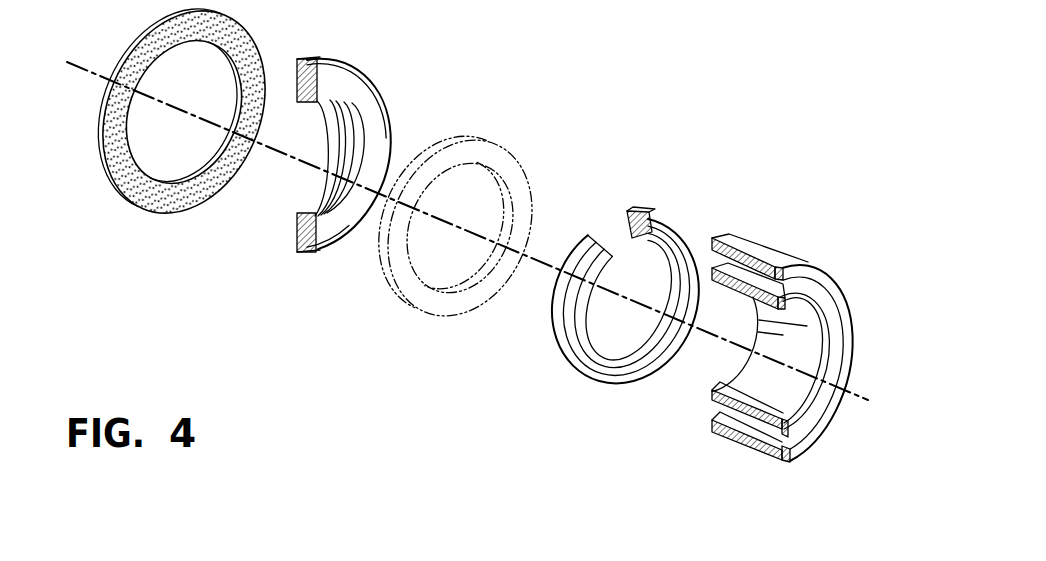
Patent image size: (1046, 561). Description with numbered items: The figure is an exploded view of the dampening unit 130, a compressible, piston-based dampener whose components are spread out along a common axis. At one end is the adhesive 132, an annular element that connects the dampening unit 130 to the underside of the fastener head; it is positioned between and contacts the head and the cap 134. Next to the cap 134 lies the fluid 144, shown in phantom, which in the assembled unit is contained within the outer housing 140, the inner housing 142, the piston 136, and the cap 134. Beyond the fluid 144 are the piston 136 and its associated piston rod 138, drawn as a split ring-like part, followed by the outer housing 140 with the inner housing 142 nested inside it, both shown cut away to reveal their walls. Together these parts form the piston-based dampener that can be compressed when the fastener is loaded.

The dampening unit 130 is at (552, 153).
The adhesive 132 is at (171, 197).
The cap 134 is at (322, 59).
The piston 136 is at (627, 228).
The piston rod 138 is at (661, 231).
The outer housing 140 is at (760, 243).
The inner housing 142 is at (714, 270).
The fluid 144 is at (498, 148).